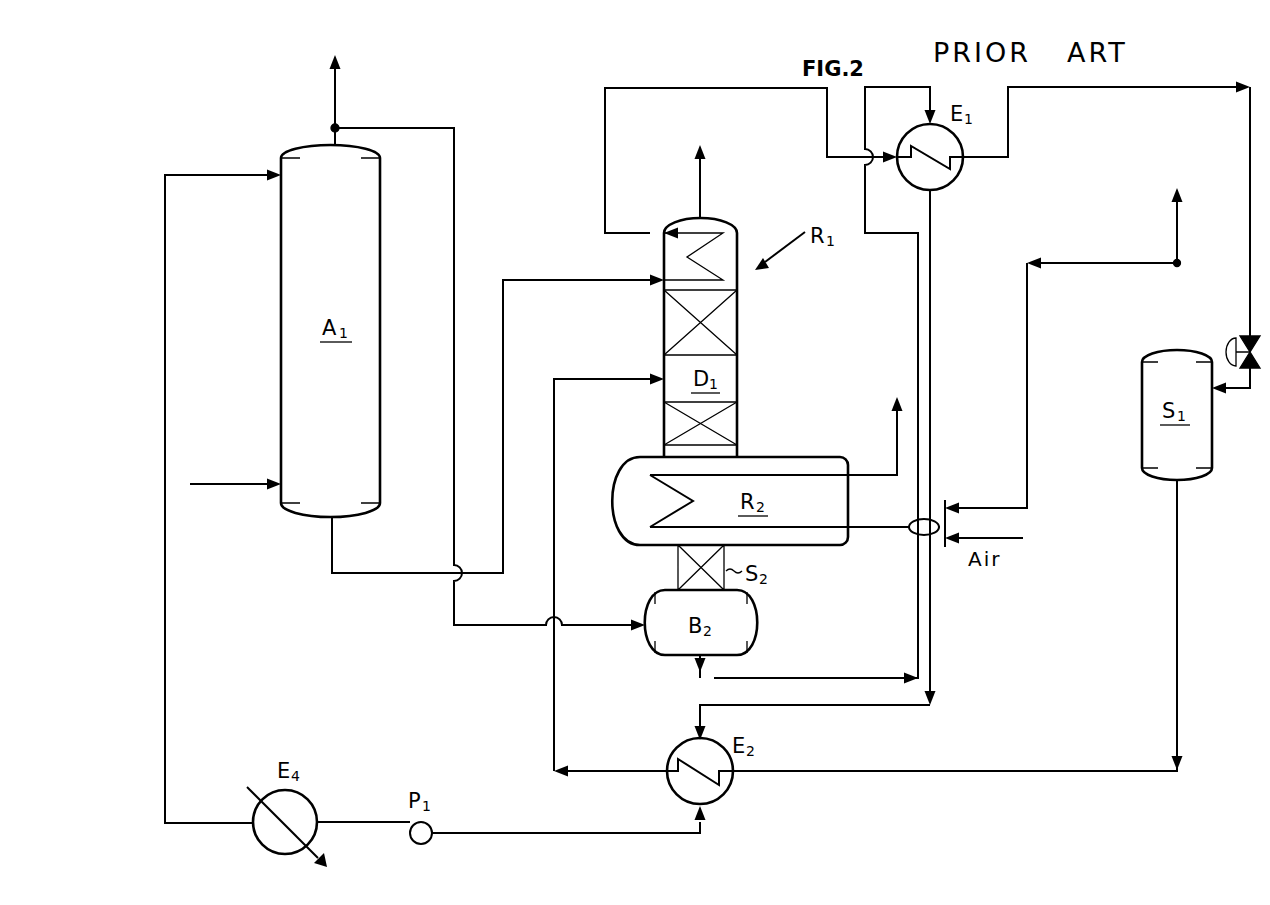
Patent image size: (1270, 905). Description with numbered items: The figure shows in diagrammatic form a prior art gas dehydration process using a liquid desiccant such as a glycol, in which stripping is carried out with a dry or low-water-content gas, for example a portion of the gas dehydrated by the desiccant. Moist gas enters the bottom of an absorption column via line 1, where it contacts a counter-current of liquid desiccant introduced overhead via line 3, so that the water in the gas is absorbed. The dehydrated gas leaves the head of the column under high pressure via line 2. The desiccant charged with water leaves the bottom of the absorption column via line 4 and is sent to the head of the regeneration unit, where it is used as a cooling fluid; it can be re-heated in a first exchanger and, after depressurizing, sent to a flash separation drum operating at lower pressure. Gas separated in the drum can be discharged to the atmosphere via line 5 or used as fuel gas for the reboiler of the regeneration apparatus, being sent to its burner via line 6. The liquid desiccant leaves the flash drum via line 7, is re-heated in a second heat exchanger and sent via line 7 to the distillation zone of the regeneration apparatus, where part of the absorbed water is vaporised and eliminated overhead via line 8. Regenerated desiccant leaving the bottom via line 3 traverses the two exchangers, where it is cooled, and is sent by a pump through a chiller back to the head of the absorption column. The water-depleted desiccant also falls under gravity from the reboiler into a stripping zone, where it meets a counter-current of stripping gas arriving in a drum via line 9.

The line 1 is at (228, 484).
The line 2 is at (335, 105).
The line 3 is at (165, 252).
The line 4 is at (383, 574).
The line 5 is at (1177, 240).
The gas line from separator to reactor 6 is at (1084, 263).
The line 7 is at (595, 378).
The line 8 is at (700, 185).
The line 9 is at (454, 233).